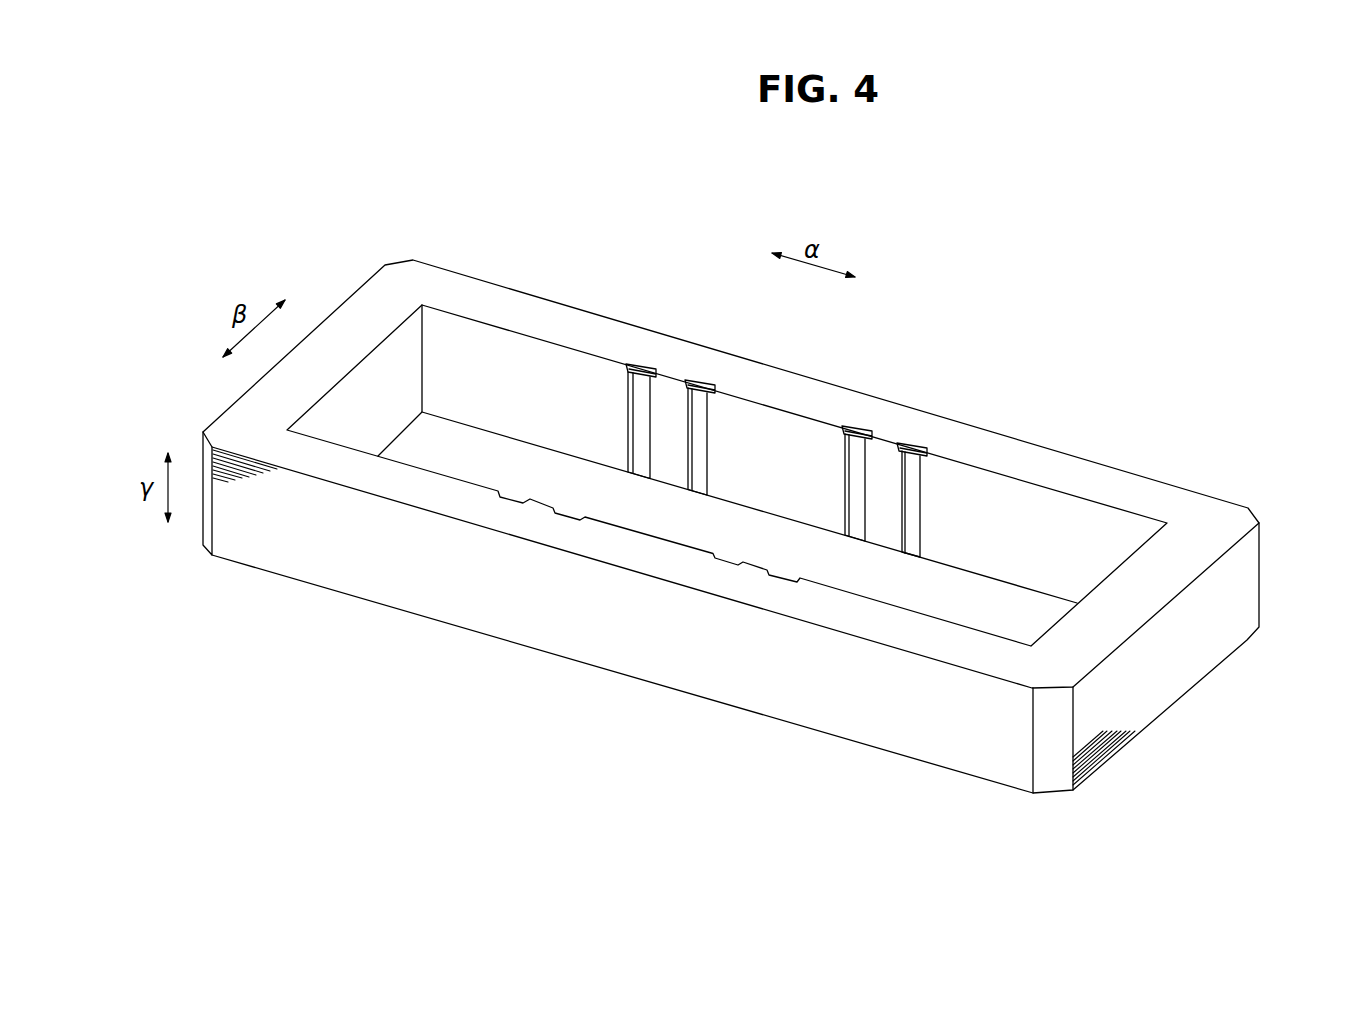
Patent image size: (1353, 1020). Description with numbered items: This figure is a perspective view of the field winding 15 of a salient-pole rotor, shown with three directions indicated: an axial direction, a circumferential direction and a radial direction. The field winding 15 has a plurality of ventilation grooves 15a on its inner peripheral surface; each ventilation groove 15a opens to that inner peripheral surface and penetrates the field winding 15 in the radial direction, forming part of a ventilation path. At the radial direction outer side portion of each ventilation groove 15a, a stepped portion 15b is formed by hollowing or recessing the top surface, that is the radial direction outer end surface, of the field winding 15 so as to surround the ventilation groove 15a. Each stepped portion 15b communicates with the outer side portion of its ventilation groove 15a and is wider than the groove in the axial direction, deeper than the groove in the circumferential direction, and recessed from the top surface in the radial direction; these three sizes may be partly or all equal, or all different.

The field winding 15 is at (1050, 467).
The ventilation groove 15a is at (640, 397).
The stepped portion 15b is at (636, 365).